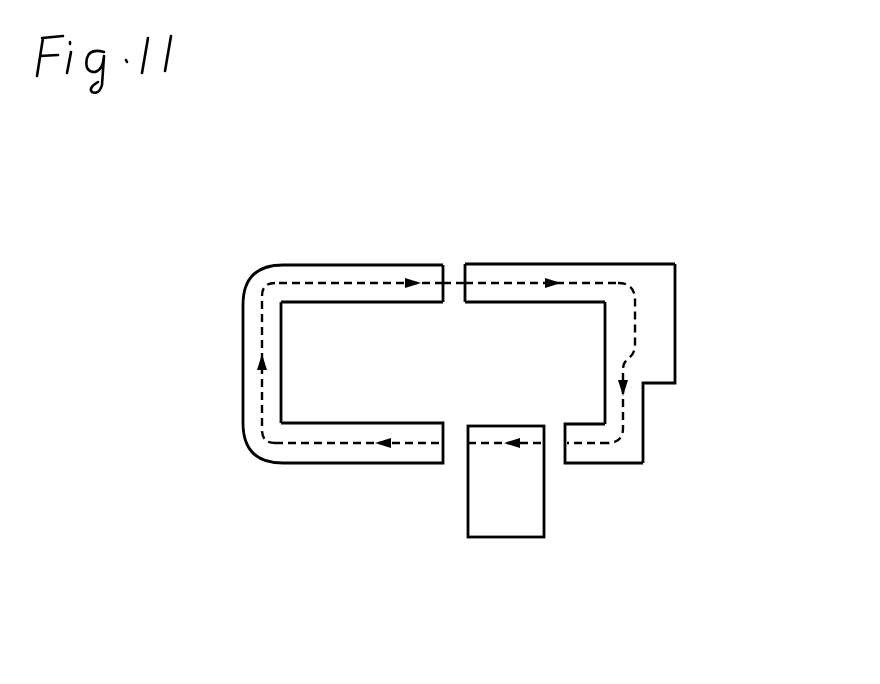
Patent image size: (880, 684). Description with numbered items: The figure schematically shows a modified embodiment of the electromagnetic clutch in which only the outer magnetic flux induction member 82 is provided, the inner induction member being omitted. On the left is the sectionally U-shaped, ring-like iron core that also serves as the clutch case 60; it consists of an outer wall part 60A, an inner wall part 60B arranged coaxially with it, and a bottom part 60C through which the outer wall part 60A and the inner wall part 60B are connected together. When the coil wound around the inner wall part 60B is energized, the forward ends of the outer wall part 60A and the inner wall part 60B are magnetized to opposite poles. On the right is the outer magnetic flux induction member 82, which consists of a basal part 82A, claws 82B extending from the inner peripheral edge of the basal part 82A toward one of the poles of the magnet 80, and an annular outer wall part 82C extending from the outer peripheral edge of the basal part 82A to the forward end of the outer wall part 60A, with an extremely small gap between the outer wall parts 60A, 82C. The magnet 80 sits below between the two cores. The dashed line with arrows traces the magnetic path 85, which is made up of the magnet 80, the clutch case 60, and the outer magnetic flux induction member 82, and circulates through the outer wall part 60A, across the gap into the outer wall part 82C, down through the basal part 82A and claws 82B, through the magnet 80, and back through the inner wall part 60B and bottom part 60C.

The clutch case 60 is at (148, 223).
The outer wall part 60A is at (345, 265).
The inner wall part 60B is at (345, 463).
The bottom part 60C is at (241, 363).
The outer magnetic flux induction member 82 is at (760, 223).
The basal part 82A is at (676, 362).
The claws 82B is at (592, 463).
The annular outer wall part 82C is at (593, 264).
The magnet 80 is at (468, 498).
The magnetic path 85 is at (500, 283).